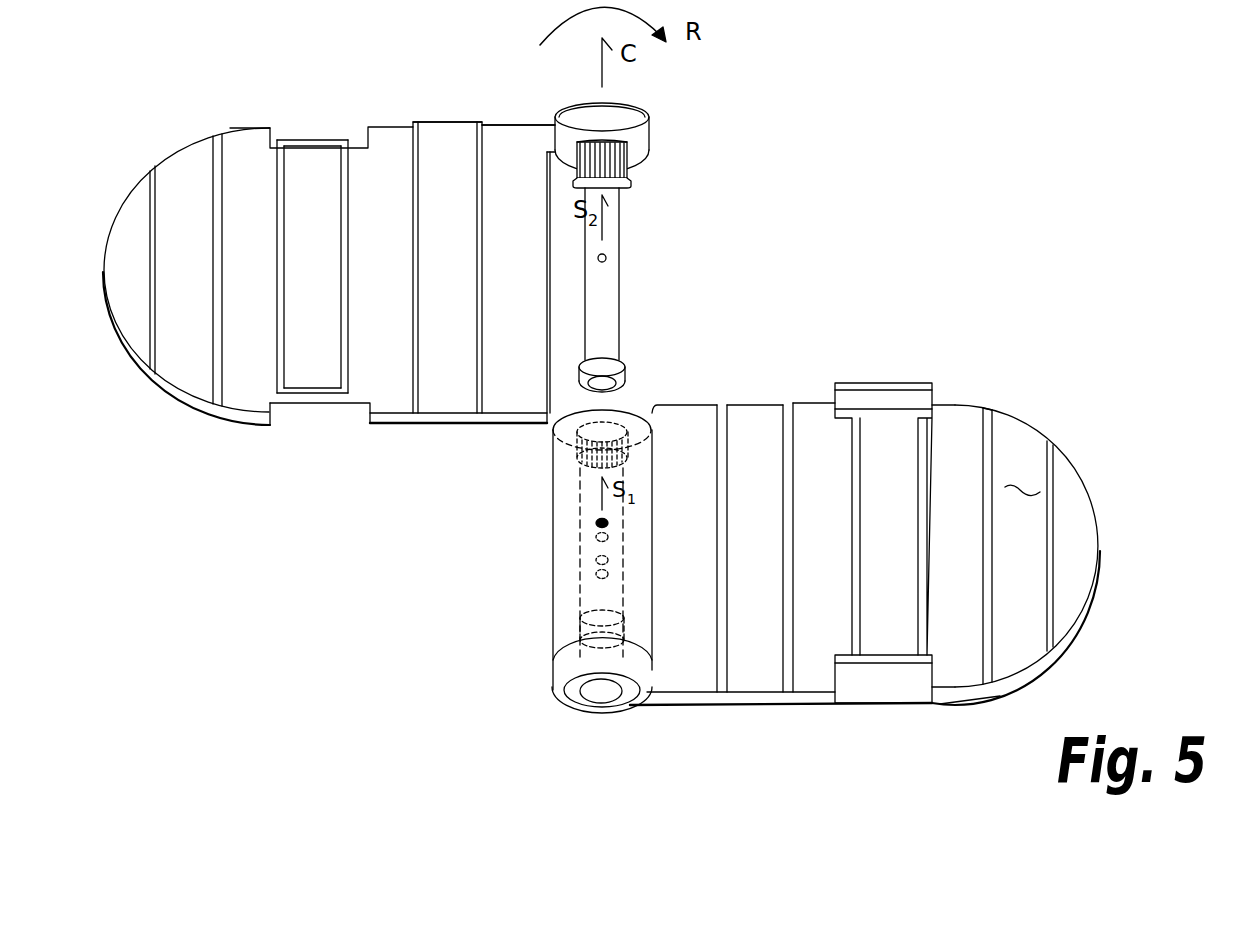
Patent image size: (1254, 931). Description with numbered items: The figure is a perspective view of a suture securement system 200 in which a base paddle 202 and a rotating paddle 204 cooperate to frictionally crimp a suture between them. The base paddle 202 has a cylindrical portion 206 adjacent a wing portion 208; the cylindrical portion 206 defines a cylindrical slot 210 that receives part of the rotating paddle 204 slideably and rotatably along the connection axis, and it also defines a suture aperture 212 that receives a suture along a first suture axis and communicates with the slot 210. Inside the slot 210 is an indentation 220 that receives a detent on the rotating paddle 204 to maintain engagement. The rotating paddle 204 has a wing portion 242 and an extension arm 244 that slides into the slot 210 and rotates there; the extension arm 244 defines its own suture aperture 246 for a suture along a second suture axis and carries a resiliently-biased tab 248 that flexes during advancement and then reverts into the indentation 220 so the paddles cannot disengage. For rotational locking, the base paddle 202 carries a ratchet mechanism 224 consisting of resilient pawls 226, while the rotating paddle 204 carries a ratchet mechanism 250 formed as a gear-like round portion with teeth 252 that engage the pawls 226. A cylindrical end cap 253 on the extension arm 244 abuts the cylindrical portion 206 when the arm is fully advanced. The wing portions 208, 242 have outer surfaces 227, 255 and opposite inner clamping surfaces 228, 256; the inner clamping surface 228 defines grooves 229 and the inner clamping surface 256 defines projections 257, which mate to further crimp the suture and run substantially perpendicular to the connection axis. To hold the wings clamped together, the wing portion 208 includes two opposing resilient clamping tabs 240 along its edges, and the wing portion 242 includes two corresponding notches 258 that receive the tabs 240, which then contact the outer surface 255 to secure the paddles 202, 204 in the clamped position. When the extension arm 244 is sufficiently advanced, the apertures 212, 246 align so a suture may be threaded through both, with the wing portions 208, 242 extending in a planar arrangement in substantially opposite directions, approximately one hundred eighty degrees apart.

The suture securement system 200 is at (1022, 104).
The base paddle 202 is at (765, 705).
The rotating paddle 204 is at (213, 415).
The cylindrical portion 206 is at (557, 573).
The wing portion 208 is at (675, 707).
The cylindrical slot 210 is at (580, 495).
The suture aperture 212 is at (600, 523).
The indentation 220 is at (587, 627).
The ratchet mechanism 224 is at (615, 425).
The pawls 226 is at (580, 442).
The outer surface 227 is at (970, 705).
The inner clamping surface 228 is at (1023, 488).
The grooves 229 is at (1005, 442).
The clamping tabs 240 is at (900, 383).
The wing portion 242 is at (507, 123).
The extension arm 244 is at (618, 230).
The suture aperture 246 is at (606, 262).
The resiliently-biased tab 248 is at (625, 373).
The ratchet mechanism 250 is at (623, 185).
The teeth 252 is at (620, 147).
The cylindrical end cap 253 is at (622, 102).
The outer surface 255 is at (168, 397).
The inner clamping surface 256 is at (256, 168).
The projections 257 is at (457, 120).
The notches 258 is at (363, 143).